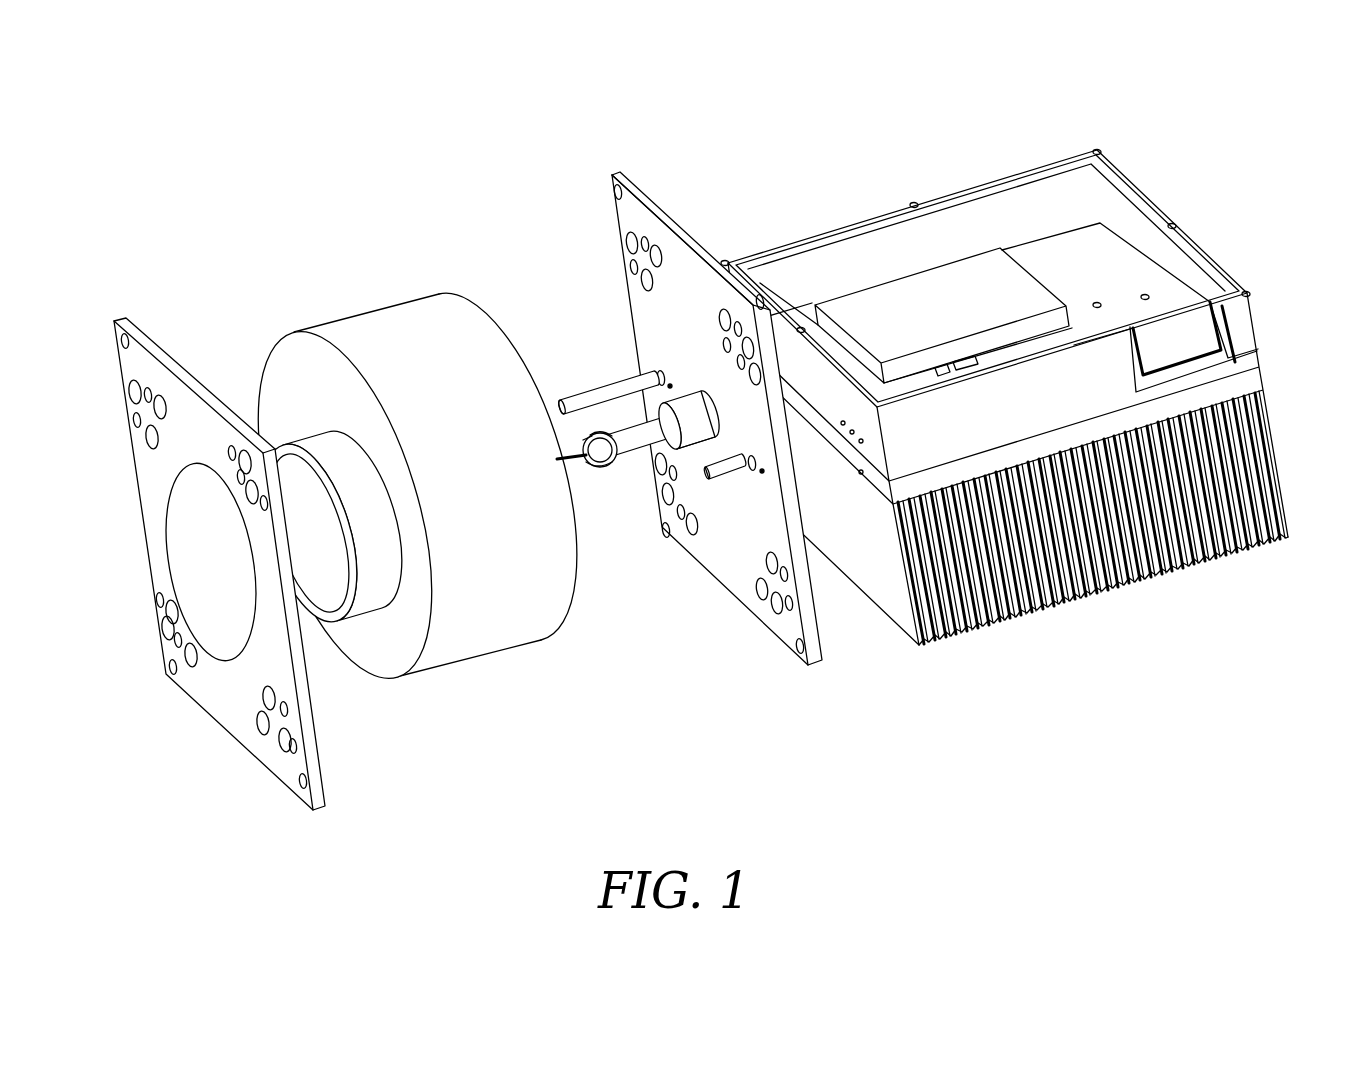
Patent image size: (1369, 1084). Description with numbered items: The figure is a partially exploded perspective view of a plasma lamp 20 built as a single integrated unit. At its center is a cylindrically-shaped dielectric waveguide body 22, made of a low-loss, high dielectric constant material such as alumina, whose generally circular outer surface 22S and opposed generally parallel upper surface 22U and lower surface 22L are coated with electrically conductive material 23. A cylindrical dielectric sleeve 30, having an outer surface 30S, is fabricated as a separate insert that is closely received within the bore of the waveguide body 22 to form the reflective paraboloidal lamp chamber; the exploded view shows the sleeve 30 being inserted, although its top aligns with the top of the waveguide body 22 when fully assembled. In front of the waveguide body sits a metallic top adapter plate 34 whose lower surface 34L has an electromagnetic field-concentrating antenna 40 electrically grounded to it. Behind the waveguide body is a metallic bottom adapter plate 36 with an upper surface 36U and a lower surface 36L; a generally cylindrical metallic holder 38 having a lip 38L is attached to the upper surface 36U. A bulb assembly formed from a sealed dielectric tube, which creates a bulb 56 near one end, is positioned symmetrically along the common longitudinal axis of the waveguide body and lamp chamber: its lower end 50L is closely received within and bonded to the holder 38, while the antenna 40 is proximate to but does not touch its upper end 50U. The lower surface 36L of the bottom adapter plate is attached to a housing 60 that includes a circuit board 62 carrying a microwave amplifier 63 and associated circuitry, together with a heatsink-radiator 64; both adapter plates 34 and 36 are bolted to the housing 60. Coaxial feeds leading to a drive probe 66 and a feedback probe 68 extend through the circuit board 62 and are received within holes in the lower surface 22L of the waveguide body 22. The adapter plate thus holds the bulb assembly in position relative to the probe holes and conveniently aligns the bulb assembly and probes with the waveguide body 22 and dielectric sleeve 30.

The plasma lamp 20 is at (704, 454).
The dielectric waveguide body 22 is at (400, 468).
The upper surface 22U is at (330, 393).
The outer surface 22S is at (502, 475).
The lower surface 22L is at (472, 294).
The electrically conductive material 23 is at (492, 533).
The dielectric sleeve 30 is at (311, 497).
The outer surface 30S is at (386, 560).
The top adapter plate 34 is at (214, 528).
The lower surface 34L is at (318, 748).
The bottom adapter plate 36 is at (682, 382).
The upper surface 36U is at (708, 293).
The lower surface 36L is at (666, 212).
The holder 38 is at (701, 444).
The lip 38L is at (675, 452).
The field-concentrating antenna 40 is at (583, 478).
The upper end 50U is at (580, 440).
The lower end 50L is at (740, 404).
The bulb 56 is at (603, 464).
The housing 60 is at (1042, 375).
The circuit board 62 is at (1103, 281).
The microwave amplifier 63 is at (962, 315).
The heatsink-radiator 64 is at (1275, 441).
The drive probe 66 is at (601, 396).
The feedback probe 68 is at (739, 470).